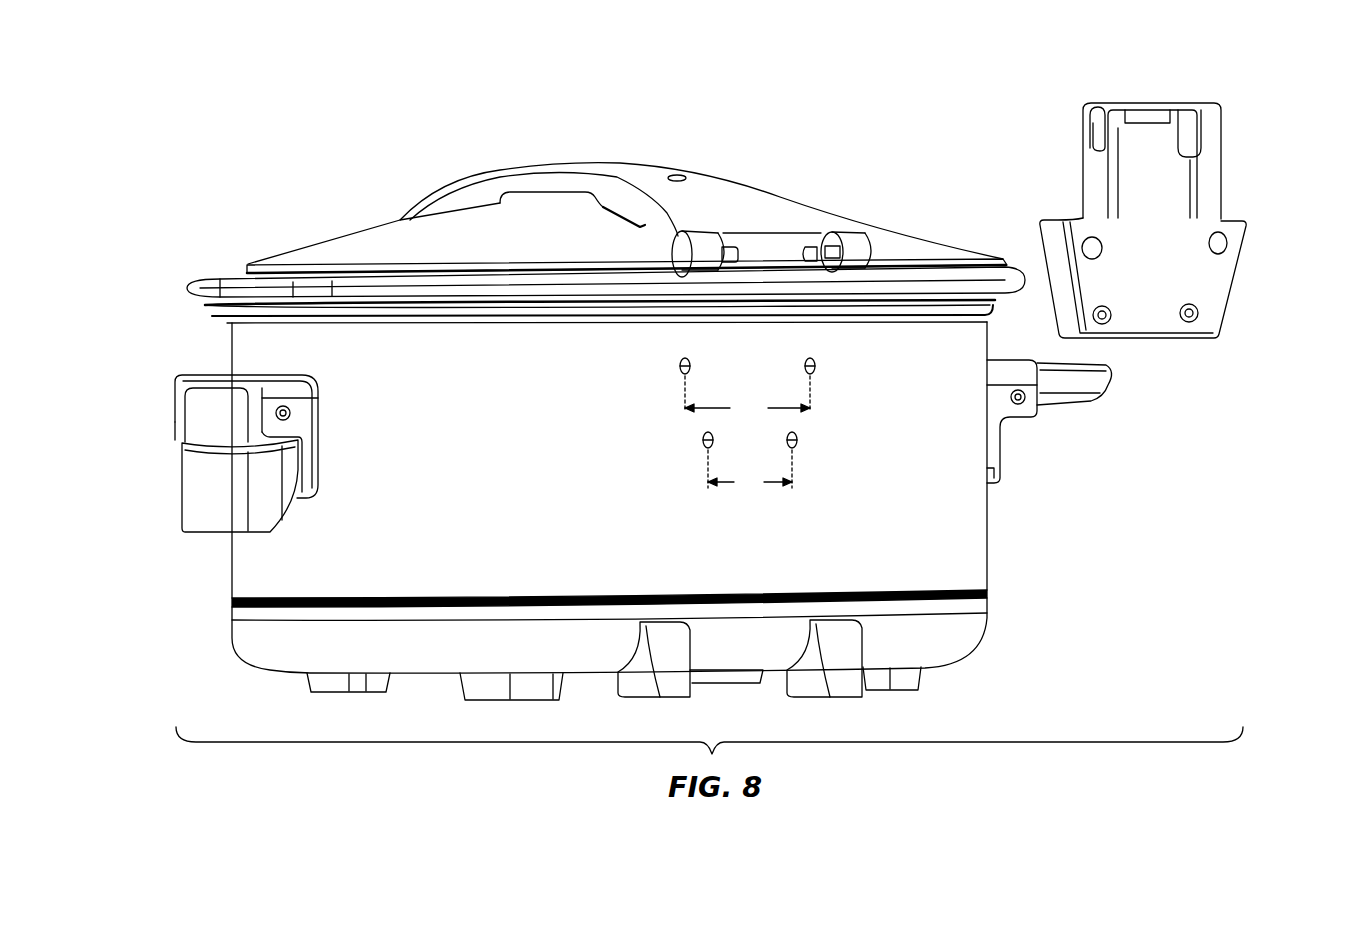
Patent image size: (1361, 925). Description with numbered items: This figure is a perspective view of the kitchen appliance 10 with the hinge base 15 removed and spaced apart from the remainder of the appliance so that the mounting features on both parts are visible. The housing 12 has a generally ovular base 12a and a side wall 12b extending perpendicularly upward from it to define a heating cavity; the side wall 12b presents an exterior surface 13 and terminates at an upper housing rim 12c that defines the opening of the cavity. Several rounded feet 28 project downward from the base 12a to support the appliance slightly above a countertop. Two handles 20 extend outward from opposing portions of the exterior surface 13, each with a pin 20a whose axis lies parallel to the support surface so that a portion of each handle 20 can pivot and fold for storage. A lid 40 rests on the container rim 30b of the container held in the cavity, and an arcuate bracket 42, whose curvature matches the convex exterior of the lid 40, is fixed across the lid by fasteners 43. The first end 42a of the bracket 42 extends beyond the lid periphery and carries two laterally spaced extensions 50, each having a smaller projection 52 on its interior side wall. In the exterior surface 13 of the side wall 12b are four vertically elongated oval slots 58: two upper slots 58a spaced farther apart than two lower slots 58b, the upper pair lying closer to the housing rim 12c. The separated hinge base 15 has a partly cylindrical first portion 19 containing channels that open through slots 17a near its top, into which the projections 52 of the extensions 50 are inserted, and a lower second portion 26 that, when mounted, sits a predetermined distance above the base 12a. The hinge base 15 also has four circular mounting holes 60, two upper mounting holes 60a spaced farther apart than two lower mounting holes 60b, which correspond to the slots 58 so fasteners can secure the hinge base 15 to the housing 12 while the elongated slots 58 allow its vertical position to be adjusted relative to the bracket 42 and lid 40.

The kitchen appliance 10 is at (417, 165).
The housing 12 is at (248, 565).
The base 12a is at (957, 636).
The side wall 12b is at (970, 571).
The housing rim 12c is at (233, 320).
The exterior surface 13 is at (970, 534).
The hinge base 15 is at (1147, 202).
The slot 17a is at (1089, 116).
The first portion 19 is at (1177, 103).
The handle 20 is at (619, 446).
The pin 20a is at (291, 415).
The second portion 26 is at (1150, 345).
The feet 28 is at (327, 694).
The container rim 30b is at (208, 276).
The lid 40 is at (348, 248).
The bracket 42 is at (585, 201).
The first end 42a is at (663, 233).
The fastener 43 is at (675, 172).
The extension 50 is at (866, 248).
The projection 52 is at (727, 240).
The slot 58 is at (729, 420).
The upper slot 58a is at (680, 372).
The lower slot 58b is at (703, 441).
The mounting hole 60 is at (1147, 267).
The upper mounting hole 60a is at (1092, 240).
The lower mounting hole 60b is at (1198, 313).